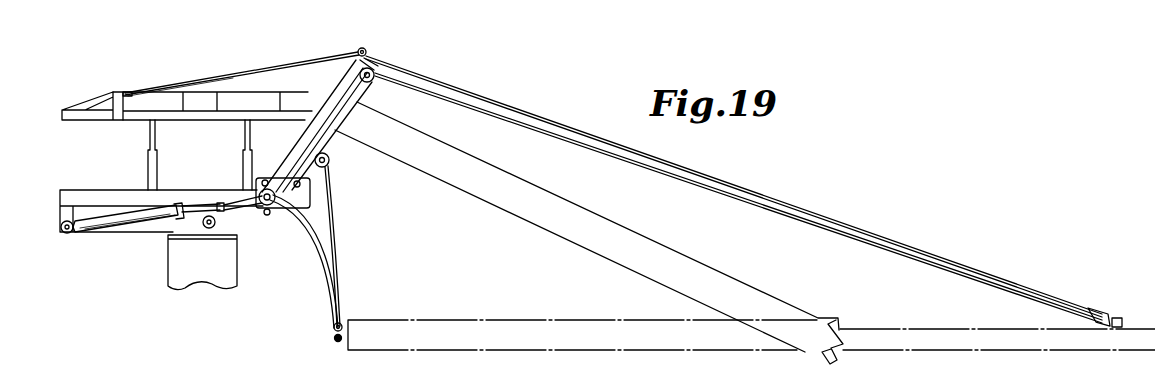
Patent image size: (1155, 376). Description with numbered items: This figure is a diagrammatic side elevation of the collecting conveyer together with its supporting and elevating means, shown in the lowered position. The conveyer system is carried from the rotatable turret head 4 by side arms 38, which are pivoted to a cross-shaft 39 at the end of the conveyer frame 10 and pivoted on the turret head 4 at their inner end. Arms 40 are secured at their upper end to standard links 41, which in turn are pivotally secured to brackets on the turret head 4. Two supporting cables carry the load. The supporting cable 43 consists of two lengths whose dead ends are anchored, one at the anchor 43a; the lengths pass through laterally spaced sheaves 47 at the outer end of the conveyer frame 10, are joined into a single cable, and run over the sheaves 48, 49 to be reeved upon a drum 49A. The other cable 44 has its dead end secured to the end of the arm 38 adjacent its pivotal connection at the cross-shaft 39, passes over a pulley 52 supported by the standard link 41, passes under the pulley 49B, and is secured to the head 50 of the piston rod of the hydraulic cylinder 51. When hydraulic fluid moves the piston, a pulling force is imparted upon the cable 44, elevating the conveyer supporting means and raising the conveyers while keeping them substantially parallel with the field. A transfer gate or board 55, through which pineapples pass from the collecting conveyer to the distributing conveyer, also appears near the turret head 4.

The turret head 4 is at (150, 232).
The conveyer frame 10 is at (622, 320).
The side arms 38 is at (322, 253).
The cross-shaft 39 is at (336, 333).
The arms 40 is at (343, 86).
The standard links 41 is at (377, 63).
The supporting cable 43 is at (562, 122).
The anchor 43a is at (358, 51).
The cable 44 is at (338, 232).
The sheaves 47 is at (1108, 316).
The sheave 48 is at (380, 68).
The sheave 49 is at (270, 210).
The drum 49A is at (209, 229).
The pulley 49B is at (266, 180).
The head of the piston rod 50 is at (222, 203).
The hydraulic cylinder 51 is at (123, 222).
The pulley 52 is at (331, 161).
The transfer gate or board 55 is at (233, 82).